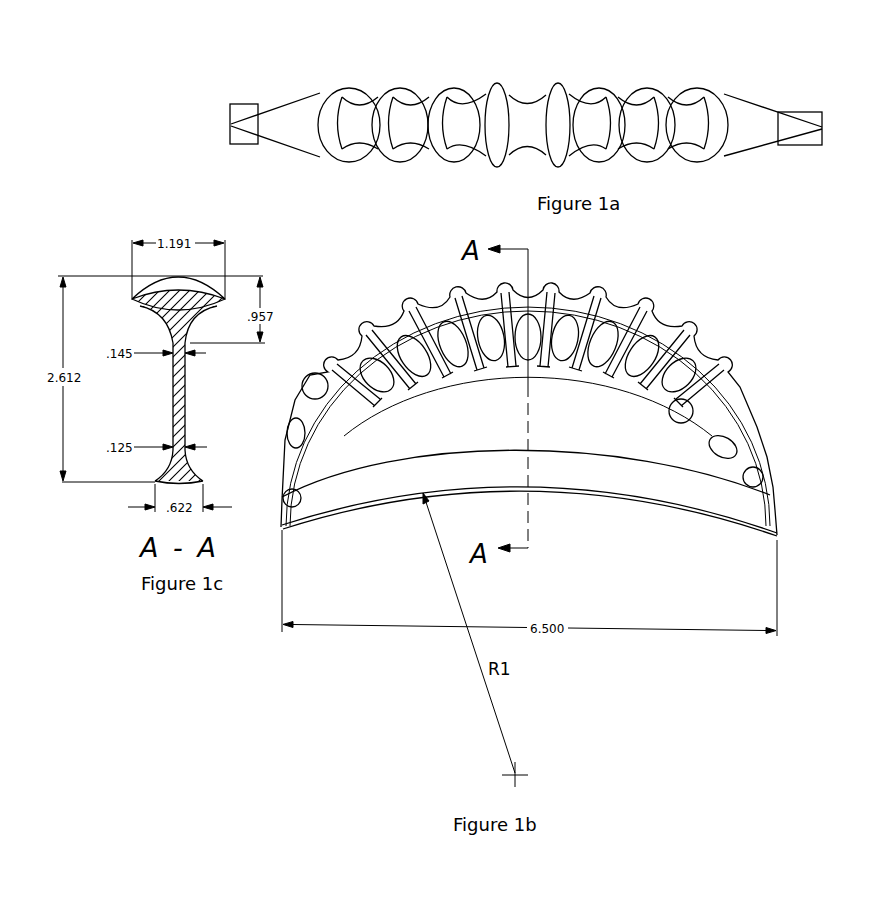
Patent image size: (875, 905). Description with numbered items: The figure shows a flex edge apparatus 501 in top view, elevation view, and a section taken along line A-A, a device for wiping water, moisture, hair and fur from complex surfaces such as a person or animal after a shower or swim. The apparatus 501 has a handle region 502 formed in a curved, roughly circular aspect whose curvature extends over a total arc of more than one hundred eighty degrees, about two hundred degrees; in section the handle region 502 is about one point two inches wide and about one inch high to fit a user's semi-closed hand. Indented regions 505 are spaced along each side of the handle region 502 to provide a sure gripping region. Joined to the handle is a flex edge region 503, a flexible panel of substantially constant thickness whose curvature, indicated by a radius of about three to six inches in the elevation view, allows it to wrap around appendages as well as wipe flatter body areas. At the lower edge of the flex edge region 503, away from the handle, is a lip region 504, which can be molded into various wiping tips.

In FIG. 1A, the apparatus 501 is at (333, 80).
In FIG. 1A, the handle region 502 is at (517, 107).
In FIG. 1C, the handle region 502 is at (177, 277).
In FIG. 1B, the handle region 502 is at (665, 340).
In FIG. 1B, the flex edge region 503 is at (610, 423).
In FIG. 1C, the lip region 504 is at (190, 476).
In FIG. 1B, the lip region 504 is at (403, 496).
In FIG. 1B, the indented regions 505 is at (620, 298).